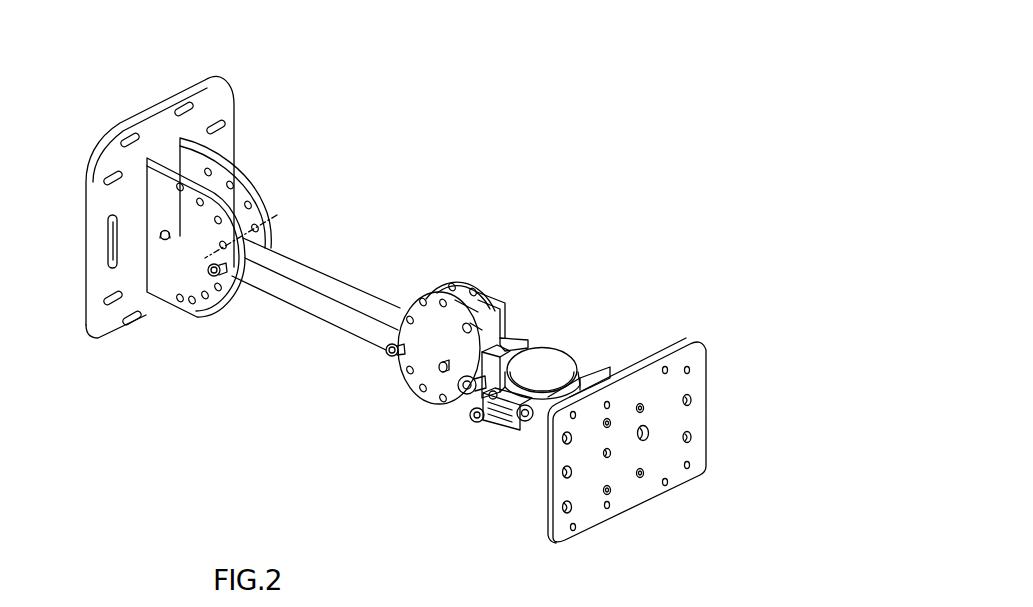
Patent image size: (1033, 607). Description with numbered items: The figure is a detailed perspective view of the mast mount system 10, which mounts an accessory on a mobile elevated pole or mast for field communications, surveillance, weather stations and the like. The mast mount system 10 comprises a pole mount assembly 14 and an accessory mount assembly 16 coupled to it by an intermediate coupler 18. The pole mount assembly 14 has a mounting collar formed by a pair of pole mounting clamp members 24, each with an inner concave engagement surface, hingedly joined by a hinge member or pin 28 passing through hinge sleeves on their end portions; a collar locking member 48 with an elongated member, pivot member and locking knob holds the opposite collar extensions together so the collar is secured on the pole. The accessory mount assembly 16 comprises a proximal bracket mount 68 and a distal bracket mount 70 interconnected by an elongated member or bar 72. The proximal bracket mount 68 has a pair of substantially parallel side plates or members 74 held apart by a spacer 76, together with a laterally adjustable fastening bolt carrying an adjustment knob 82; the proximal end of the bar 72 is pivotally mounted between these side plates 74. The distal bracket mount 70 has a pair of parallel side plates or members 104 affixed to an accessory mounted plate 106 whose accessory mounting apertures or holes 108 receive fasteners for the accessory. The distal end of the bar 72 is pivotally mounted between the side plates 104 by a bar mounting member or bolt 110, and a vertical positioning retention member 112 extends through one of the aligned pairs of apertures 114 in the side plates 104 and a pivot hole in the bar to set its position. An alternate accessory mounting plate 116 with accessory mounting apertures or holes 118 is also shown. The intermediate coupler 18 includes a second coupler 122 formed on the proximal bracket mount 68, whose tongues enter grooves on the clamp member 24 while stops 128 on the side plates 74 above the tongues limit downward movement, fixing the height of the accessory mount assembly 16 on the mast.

The mast mount system 10 is at (430, 103).
The pole mount assembly 14 is at (594, 286).
The accessory mount assembly 16 is at (272, 92).
The intermediate coupler 18 is at (411, 472).
The pole mounting clamp member 24 is at (562, 347).
The hinge member or pin 28 is at (568, 348).
The collar locking member 48 is at (469, 424).
The proximal bracket mount 68 is at (407, 261).
The distal bracket mount 70 is at (90, 376).
The elongated member or bar 72 is at (313, 280).
The substantially parallel side plate or member 74 is at (458, 288).
The spacer 76 is at (486, 310).
The adjustment knob 82 is at (452, 400).
The substantially parallel side plate or member 104 is at (218, 173).
The accessory mounted plate 106 is at (163, 132).
The accessory mounting aperture or hole 108 is at (121, 131).
The bar mounting member or bolt 110 is at (165, 243).
The vertical positioning retention member 112 is at (211, 255).
The aperture 114 is at (217, 221).
The accessory mounting plate 116 is at (592, 515).
The accessory mounting aperture or hole 118 is at (557, 511).
The second coupler 122 is at (513, 292).
The stop 128 is at (522, 343).